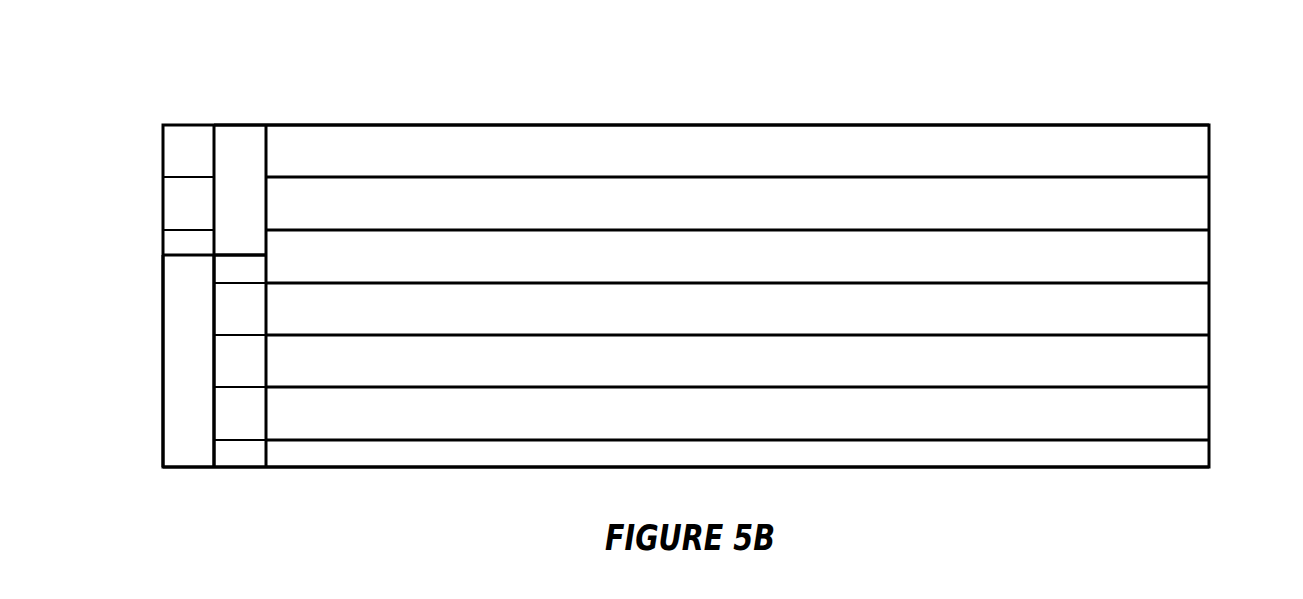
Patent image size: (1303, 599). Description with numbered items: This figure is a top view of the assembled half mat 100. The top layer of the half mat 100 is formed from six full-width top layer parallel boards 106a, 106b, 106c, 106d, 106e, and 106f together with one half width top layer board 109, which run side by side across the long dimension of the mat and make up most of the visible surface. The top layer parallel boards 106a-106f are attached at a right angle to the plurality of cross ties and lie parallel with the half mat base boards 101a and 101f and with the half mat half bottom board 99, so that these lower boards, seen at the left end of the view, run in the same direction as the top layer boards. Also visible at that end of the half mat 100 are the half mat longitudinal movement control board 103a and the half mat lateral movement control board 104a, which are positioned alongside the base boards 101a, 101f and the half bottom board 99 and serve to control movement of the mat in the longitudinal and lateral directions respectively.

The half mat 100 is at (1183, 90).
The half mat base board 101f is at (187, 143).
The half mat lateral movement control board 104a is at (238, 138).
The half mat base board 101a is at (228, 412).
The half mat longitudinal movement control board 103a is at (181, 450).
The half mat half bottom board 99 is at (241, 455).
The top layer parallel board 106f is at (1190, 152).
The top layer parallel board 106e is at (1190, 204).
The top layer parallel board 106d is at (1190, 255).
The top layer parallel board 106c is at (1190, 304).
The top layer parallel board 106b is at (1190, 357).
The top layer parallel board 106a is at (1190, 409).
The half width top layer board 109 is at (1190, 455).